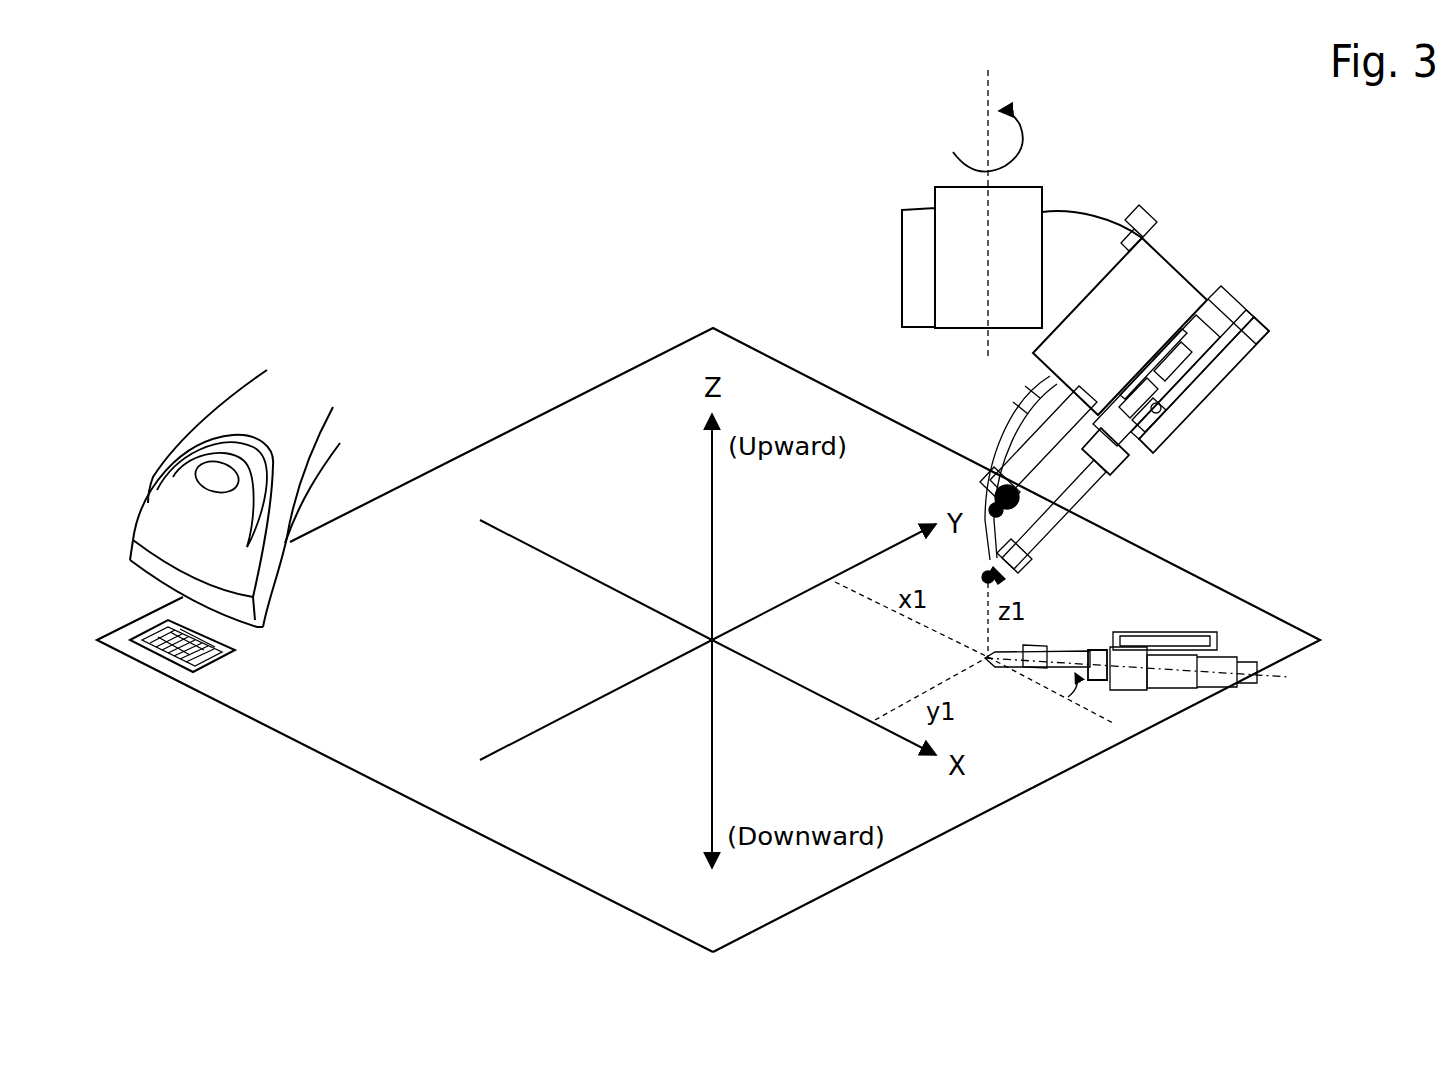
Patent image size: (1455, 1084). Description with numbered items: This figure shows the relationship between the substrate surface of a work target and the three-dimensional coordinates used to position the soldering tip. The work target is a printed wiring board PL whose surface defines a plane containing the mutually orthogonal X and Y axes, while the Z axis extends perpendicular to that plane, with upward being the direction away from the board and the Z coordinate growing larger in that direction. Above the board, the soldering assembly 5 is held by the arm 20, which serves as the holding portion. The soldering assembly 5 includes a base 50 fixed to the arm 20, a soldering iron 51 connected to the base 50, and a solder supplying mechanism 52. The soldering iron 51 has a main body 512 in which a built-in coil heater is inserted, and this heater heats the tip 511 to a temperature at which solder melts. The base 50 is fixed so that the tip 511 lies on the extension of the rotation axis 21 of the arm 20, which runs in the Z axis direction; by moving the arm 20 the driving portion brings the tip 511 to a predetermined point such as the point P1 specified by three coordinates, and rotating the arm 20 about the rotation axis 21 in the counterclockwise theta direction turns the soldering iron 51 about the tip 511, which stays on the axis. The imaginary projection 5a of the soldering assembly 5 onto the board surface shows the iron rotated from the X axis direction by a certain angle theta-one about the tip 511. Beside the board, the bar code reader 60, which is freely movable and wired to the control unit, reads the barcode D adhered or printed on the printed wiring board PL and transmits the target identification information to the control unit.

The soldering assembly 5 is at (1159, 370).
The imaginary projection of soldering assembly 5a is at (1178, 622).
The arm 20 is at (1050, 194).
The rotation axis 21 is at (974, 135).
The base 50 is at (1232, 367).
The soldering iron 51 is at (1133, 478).
The tip 511 is at (1010, 572).
The main body 512 is at (1145, 420).
The solder supplying mechanism 52 is at (1101, 315).
The bar code reader 60 is at (213, 418).
The printed wiring board PL is at (456, 455).
The barcode D is at (215, 660).
The three-dimensional predetermined point P1 is at (998, 579).